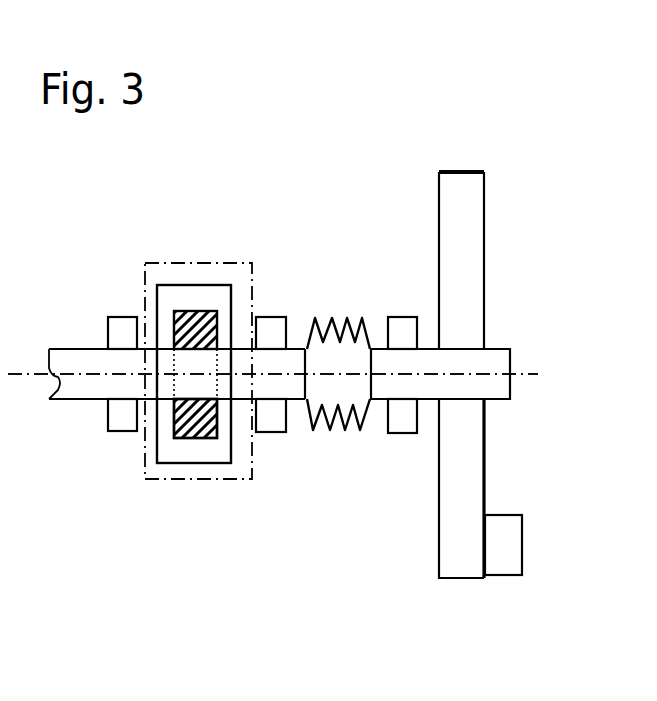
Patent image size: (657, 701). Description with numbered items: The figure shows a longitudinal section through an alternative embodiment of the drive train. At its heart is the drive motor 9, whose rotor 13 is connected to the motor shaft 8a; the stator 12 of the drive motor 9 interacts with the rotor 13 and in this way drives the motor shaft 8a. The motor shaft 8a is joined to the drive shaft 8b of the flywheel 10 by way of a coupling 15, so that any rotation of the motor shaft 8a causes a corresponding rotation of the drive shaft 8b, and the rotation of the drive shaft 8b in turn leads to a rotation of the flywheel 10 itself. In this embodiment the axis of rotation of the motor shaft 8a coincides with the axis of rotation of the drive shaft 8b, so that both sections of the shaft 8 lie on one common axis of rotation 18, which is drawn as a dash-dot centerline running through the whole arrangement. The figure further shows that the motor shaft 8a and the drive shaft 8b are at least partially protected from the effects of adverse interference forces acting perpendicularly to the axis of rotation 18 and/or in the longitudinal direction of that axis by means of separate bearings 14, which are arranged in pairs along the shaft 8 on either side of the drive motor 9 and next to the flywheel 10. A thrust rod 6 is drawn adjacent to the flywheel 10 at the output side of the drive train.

The thrust rod 6 is at (509, 529).
The shaft 8 is at (10, 372).
The motor shaft 8a is at (70, 360).
The drive shaft 8b is at (498, 362).
The drive motor 9 is at (145, 477).
The flywheel 10 is at (475, 206).
The stator 12 is at (176, 443).
The rotor 13 is at (216, 438).
The bearings 14 is at (401, 322).
The coupling 15 is at (333, 387).
The axis of rotation 18 is at (553, 384).